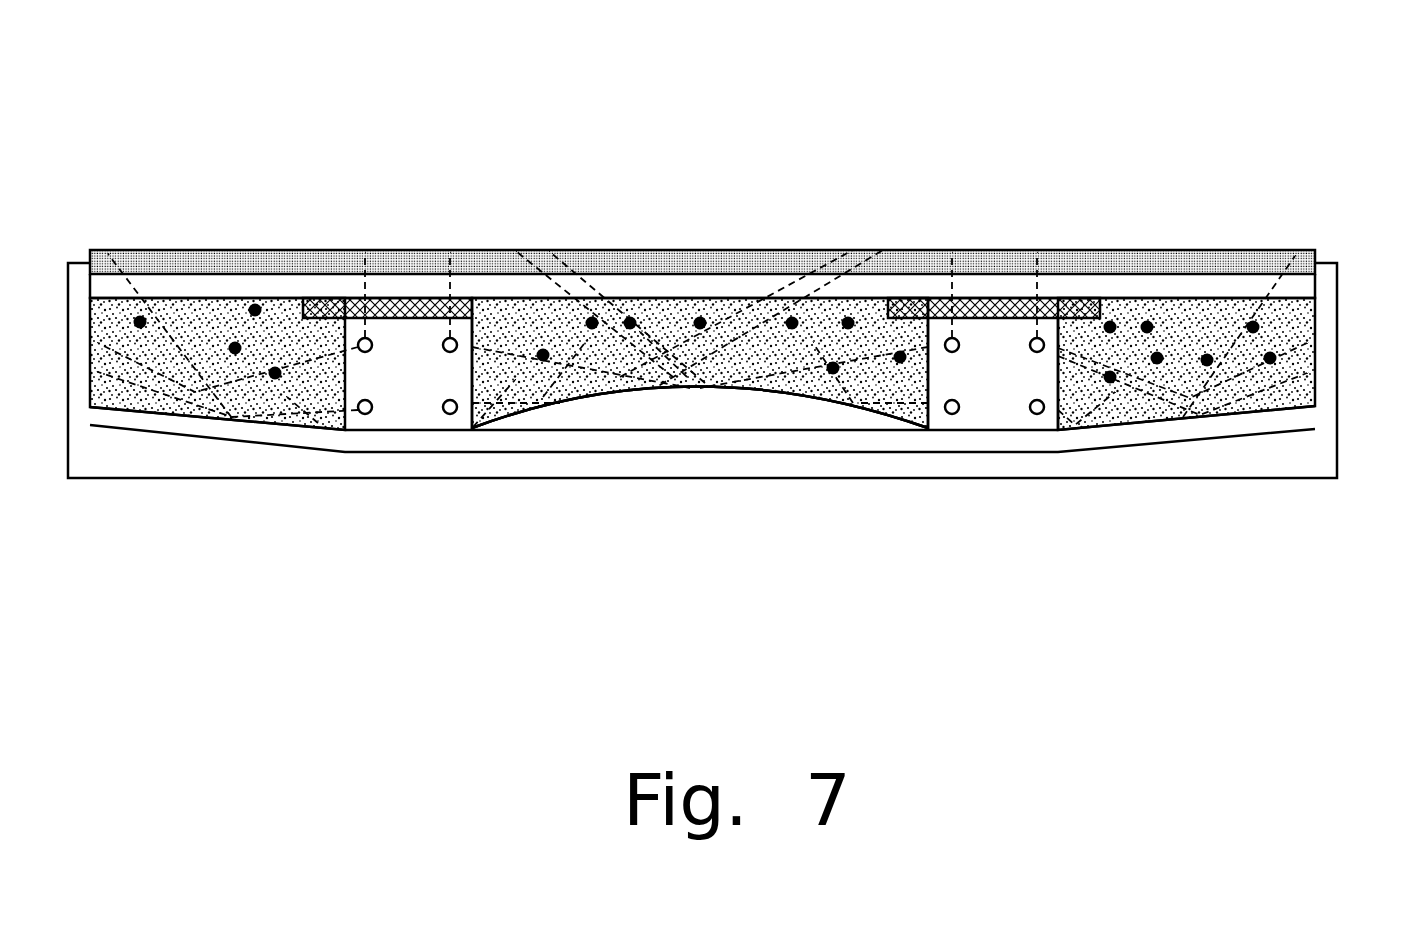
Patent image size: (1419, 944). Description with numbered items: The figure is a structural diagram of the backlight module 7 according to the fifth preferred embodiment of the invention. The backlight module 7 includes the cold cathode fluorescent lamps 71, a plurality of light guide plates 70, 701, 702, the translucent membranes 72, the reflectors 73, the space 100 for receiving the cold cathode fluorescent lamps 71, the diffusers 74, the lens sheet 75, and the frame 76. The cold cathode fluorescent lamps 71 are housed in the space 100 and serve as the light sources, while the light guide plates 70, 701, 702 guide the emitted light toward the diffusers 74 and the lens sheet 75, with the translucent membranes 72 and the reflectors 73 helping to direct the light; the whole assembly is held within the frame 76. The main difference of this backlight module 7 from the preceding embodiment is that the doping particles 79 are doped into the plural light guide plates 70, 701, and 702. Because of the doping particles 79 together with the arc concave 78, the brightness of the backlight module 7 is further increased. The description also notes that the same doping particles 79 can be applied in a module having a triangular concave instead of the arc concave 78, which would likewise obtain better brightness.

The backlight module 7 is at (226, 116).
The light guide plate 70 is at (675, 320).
The light guide plate 701 is at (185, 315).
The light guide plate 702 is at (1277, 313).
The cold cathode fluorescent lamps 71 is at (365, 414).
The translucent membranes 72 is at (1013, 292).
The reflectors 73 is at (1215, 428).
The diffusers 74 is at (1193, 290).
The lens sheet 75 is at (1302, 258).
The frame 76 is at (712, 460).
The arc concave 78 is at (623, 412).
The doping particles 79 is at (255, 312).
The space for receiving the cold cathode fluorescent lamps 100 is at (400, 330).